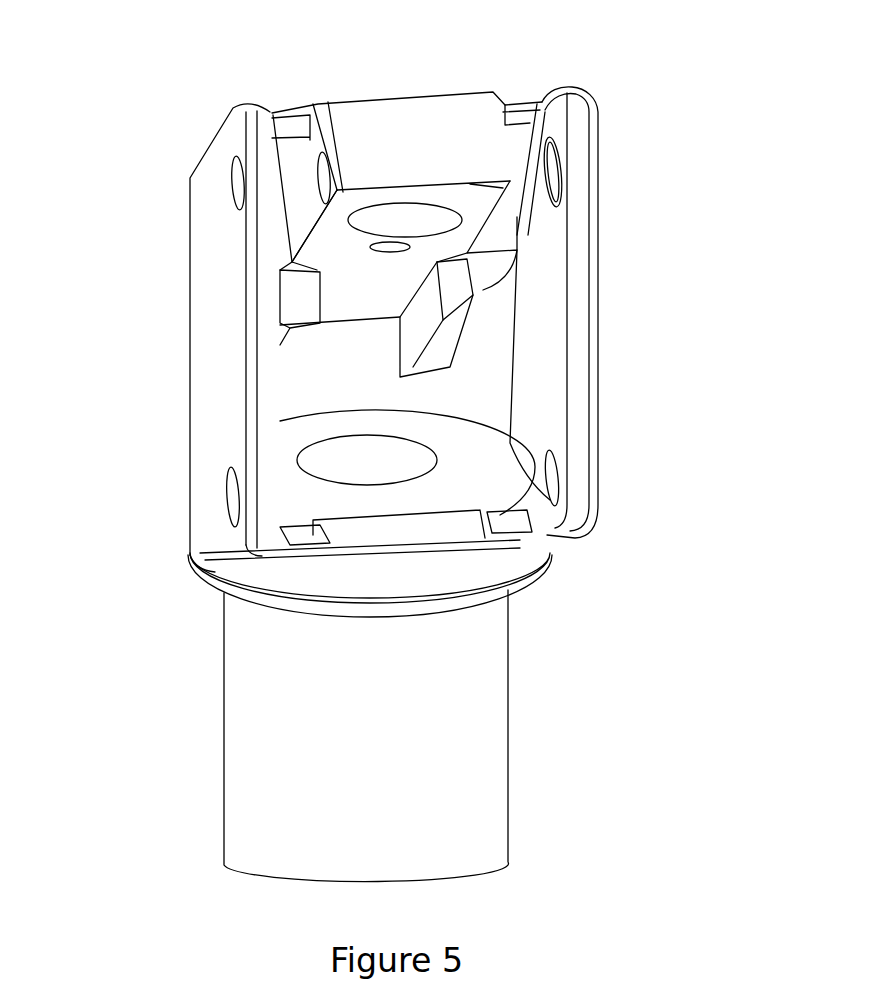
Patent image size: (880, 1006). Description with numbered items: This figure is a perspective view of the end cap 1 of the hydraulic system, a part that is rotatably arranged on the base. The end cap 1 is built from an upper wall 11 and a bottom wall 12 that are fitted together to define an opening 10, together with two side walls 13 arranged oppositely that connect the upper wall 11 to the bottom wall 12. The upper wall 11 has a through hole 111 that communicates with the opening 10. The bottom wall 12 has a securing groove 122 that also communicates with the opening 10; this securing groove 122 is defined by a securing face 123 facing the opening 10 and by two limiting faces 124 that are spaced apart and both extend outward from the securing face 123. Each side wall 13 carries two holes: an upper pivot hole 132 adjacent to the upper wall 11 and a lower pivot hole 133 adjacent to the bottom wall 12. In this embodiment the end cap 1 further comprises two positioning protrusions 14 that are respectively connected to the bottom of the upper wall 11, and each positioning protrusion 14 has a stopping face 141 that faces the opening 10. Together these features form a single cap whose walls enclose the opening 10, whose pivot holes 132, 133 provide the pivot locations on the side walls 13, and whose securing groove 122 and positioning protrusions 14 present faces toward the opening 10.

The end cap 1 is at (404, 123).
The opening 10 is at (490, 347).
The upper wall 11 is at (523, 137).
The through hole 111 is at (417, 213).
The bottom wall 12 is at (557, 508).
The securing groove 122 is at (487, 557).
The securing face 123 is at (395, 535).
The limiting faces 124 is at (460, 510).
The side walls 13 is at (578, 413).
The upper pivot hole 132 is at (560, 160).
The lower pivot hole 133 is at (563, 490).
The positioning protrusions 14 is at (393, 318).
The stopping face 141 is at (458, 308).